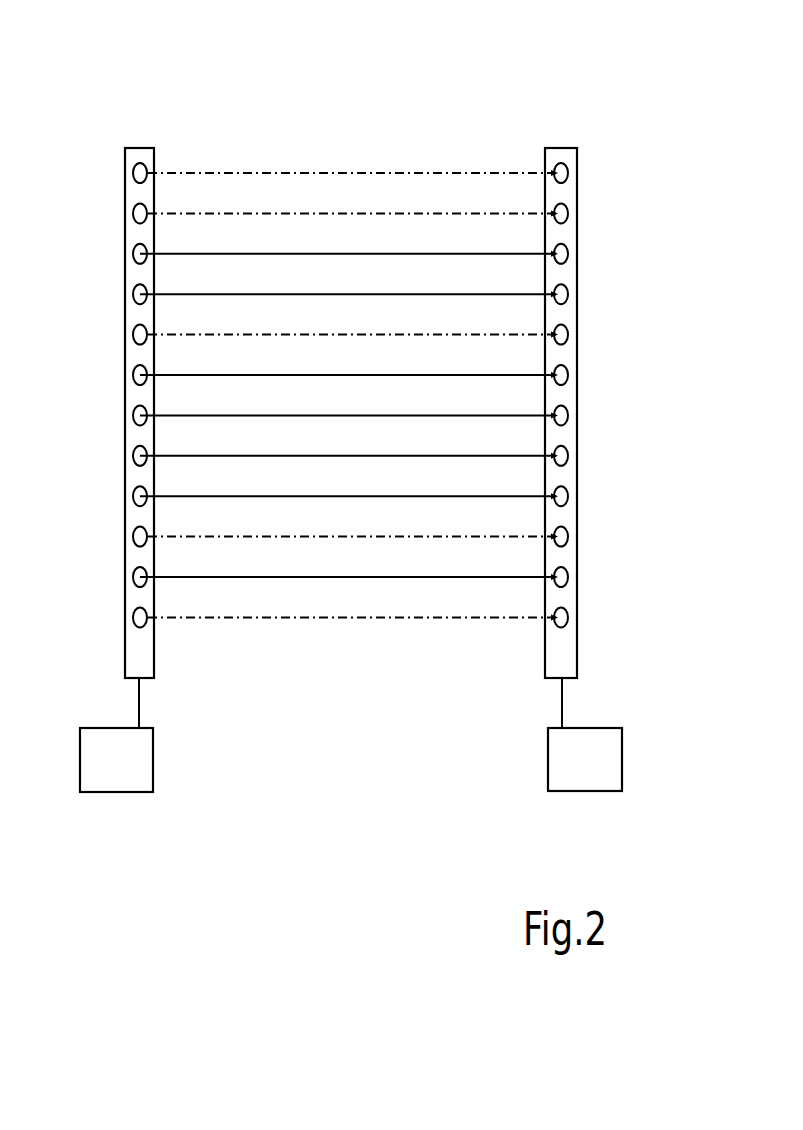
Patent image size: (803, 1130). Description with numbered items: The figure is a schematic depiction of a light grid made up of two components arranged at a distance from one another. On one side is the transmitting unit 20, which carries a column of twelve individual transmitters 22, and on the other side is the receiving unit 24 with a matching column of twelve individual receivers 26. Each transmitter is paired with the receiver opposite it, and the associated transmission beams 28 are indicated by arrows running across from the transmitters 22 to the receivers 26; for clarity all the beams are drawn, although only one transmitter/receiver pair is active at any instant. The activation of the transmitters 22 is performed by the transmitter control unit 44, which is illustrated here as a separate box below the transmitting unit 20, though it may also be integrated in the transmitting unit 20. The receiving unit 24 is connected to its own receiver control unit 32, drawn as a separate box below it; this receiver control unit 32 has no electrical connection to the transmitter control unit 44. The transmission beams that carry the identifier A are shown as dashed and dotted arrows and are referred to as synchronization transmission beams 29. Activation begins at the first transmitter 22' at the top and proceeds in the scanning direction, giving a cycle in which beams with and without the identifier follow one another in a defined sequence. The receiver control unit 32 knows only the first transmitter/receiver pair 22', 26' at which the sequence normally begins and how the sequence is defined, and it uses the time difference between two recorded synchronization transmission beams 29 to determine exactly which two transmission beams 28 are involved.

The transmitting unit 20 is at (132, 653).
The transmitters 22 is at (87, 415).
The first transmitter 22' is at (96, 94).
The receiving unit 24 is at (562, 663).
The receivers 26 is at (628, 415).
The first receiver 26' is at (628, 120).
The transmission beams 28 is at (245, 253).
The synchronization transmission beams 29 is at (330, 213).
The receiver control unit 32 is at (587, 776).
The transmitter control unit 44 is at (113, 773).